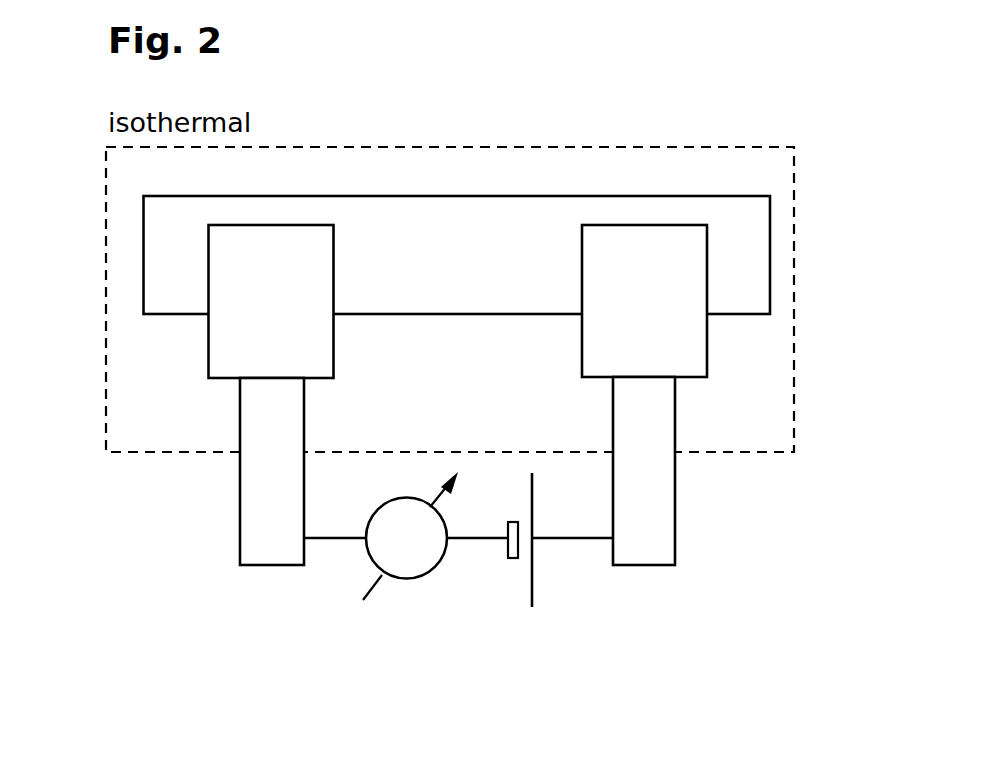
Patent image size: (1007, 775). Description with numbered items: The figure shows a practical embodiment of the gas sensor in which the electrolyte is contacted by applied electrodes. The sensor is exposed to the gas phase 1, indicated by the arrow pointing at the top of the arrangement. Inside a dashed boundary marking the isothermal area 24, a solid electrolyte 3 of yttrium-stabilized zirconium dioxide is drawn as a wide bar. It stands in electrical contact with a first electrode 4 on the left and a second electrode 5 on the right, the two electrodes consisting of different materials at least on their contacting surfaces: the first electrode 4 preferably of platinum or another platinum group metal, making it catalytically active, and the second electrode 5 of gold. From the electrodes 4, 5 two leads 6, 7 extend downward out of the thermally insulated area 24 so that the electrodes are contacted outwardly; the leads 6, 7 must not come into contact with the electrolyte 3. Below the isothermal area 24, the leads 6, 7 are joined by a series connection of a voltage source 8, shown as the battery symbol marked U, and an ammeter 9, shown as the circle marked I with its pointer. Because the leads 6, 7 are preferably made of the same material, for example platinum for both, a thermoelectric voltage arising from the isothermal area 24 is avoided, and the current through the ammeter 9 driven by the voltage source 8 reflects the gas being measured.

The gas phase 1 is at (596, 124).
The electrolyte 3 is at (418, 248).
The first electrode 4 is at (249, 329).
The second electrode 5 is at (670, 345).
The lead 6 is at (277, 467).
The lead 7 is at (646, 470).
The voltage source 8 is at (533, 585).
The ammeter 9 is at (422, 577).
The isothermal area 24 is at (742, 147).